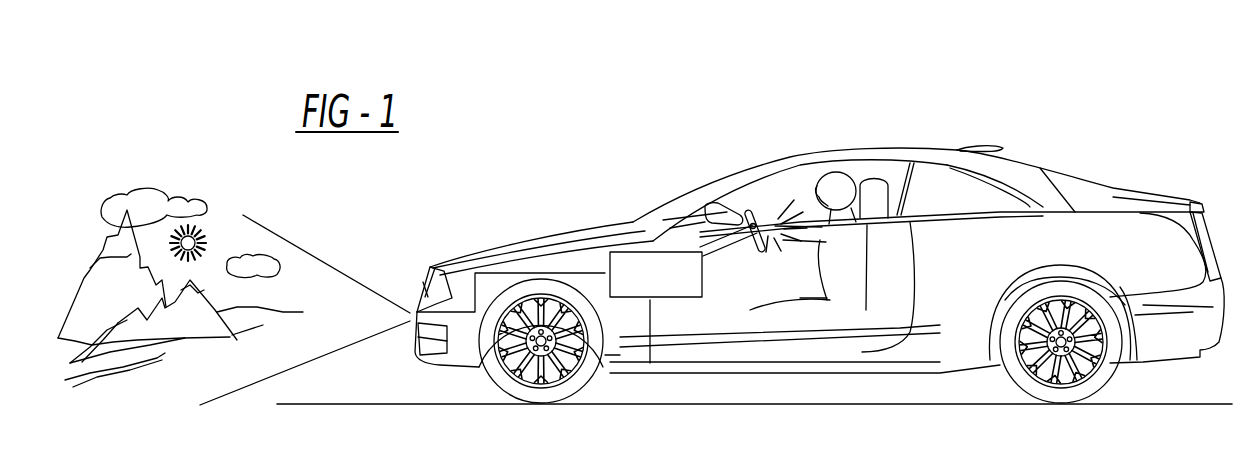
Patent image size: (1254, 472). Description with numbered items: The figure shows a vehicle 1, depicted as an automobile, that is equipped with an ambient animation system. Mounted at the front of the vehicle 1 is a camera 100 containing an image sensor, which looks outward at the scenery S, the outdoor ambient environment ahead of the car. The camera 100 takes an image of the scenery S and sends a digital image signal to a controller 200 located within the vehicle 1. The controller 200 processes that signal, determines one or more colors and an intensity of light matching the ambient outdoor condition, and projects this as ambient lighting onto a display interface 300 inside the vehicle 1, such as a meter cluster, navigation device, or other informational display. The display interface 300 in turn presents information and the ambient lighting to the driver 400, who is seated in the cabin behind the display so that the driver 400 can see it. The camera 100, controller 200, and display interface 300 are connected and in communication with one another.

The vehicle 1 is at (418, 381).
The camera 100 is at (423, 282).
The controller 200 is at (630, 252).
The display interface 300 is at (777, 215).
The driver 400 is at (833, 177).
The scenery S is at (163, 352).